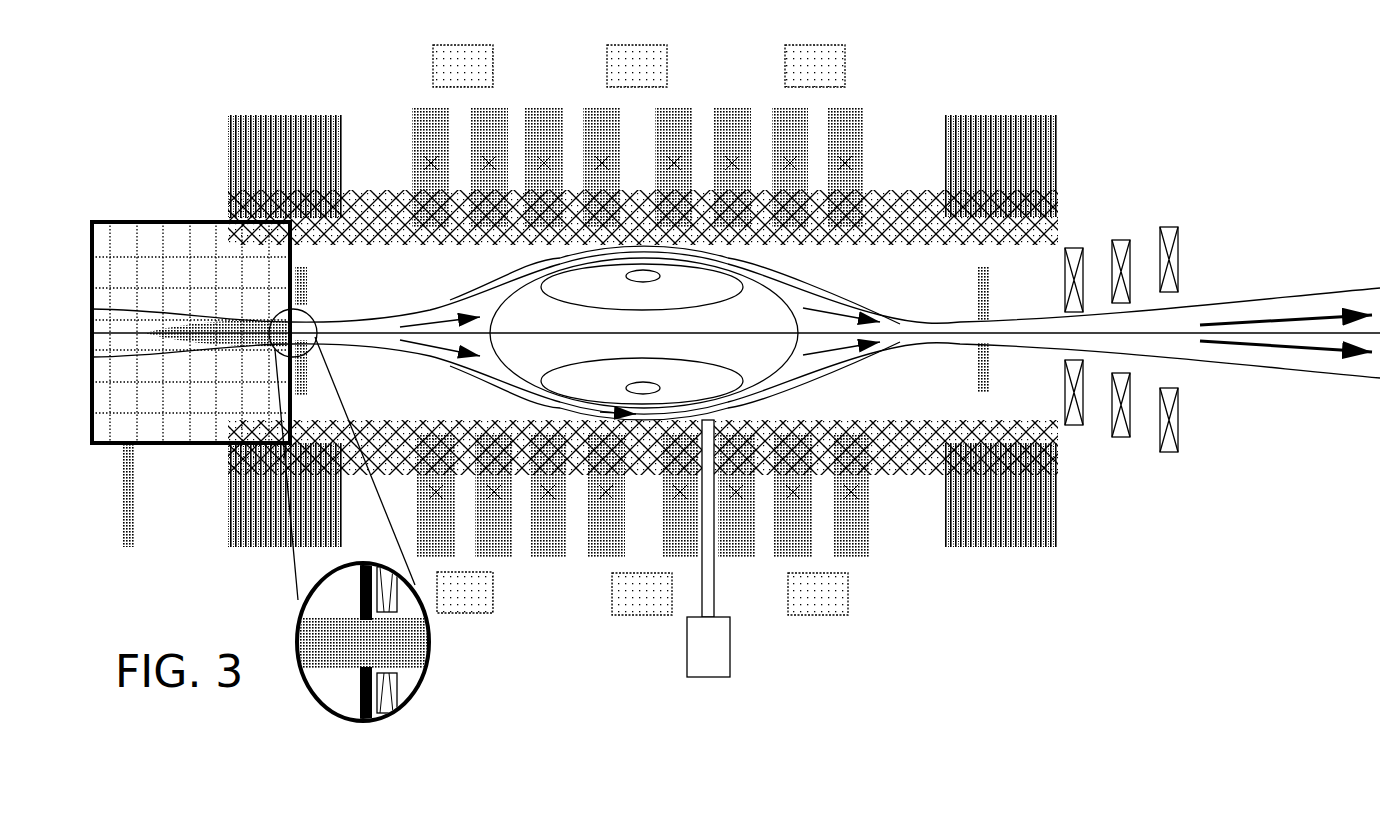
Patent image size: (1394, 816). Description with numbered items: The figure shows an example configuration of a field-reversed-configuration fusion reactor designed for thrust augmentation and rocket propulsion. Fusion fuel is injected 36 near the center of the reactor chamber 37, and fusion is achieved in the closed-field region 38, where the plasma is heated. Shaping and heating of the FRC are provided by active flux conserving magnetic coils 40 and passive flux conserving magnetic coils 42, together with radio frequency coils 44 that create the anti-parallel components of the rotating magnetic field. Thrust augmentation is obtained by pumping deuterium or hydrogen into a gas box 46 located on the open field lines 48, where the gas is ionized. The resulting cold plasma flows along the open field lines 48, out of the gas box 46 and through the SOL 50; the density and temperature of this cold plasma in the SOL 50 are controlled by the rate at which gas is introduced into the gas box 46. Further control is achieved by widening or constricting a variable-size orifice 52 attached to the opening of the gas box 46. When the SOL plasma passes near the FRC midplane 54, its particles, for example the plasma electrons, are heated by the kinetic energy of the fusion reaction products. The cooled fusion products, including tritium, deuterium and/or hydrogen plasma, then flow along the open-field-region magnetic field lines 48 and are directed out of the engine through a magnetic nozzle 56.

The fusion fuel injection 36 is at (708, 548).
The reactor chamber 37 is at (371, 190).
The closed-field region 38 is at (642, 334).
The active flux conserving magnetic coils 40 is at (988, 113).
The passive flux conserving magnetic coils 42 is at (866, 560).
The radio frequency coils 44 is at (639, 66).
The gas box 46 is at (192, 333).
The open field lines 48 is at (886, 348).
The SOL 50 is at (792, 300).
The variable-size orifice 52 is at (366, 622).
The FRC midplane 54 is at (556, 404).
The magnetic nozzle 56 is at (1121, 335).